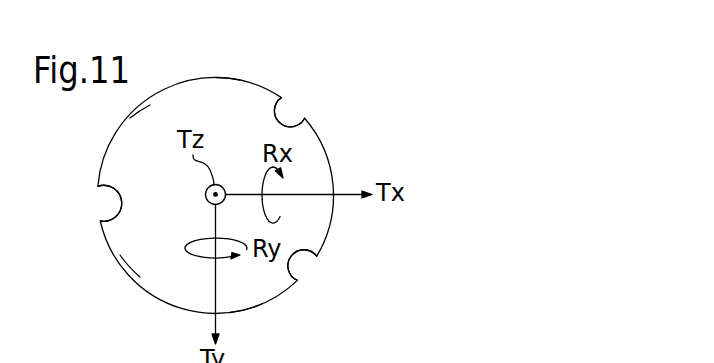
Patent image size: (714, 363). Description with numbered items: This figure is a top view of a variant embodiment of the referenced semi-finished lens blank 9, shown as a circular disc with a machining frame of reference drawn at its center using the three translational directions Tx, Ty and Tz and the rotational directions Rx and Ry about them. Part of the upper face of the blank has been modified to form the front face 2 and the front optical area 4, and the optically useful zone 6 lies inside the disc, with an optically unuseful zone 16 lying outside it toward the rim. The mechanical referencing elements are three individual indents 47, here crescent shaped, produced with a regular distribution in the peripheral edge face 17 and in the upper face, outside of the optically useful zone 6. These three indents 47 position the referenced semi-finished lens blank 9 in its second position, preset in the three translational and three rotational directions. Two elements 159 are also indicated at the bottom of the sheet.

The front face 2 is at (175, 209).
The front optical area 4 is at (226, 100).
The optically useful zone 6 is at (146, 159).
The referenced semi-finished lens blank 9 is at (382, 112).
The optically unuseful zone 16 is at (117, 241).
The peripheral edge face 17 is at (257, 309).
The indent 47 is at (287, 113).
The strut 159 is at (22, 362).